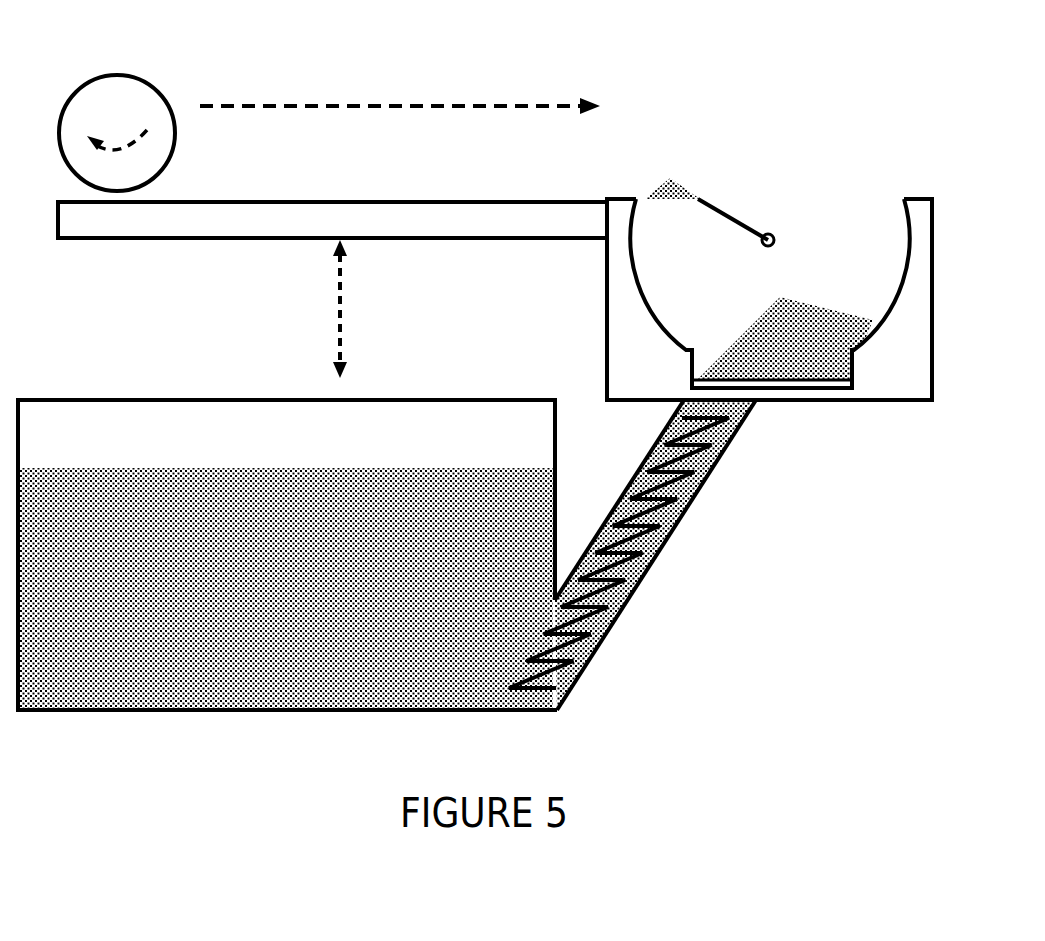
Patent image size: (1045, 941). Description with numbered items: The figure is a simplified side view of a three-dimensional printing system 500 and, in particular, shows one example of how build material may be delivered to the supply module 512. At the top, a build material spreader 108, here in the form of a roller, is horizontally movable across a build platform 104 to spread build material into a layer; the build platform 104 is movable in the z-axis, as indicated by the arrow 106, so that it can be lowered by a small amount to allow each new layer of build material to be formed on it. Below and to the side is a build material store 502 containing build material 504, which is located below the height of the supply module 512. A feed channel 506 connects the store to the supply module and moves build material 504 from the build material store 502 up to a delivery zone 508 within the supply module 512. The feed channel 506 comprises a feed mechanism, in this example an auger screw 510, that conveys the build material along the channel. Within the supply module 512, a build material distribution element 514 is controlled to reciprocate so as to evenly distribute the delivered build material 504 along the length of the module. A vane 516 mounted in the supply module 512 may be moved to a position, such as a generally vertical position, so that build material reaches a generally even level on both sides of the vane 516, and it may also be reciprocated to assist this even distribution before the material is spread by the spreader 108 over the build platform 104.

The powder handling system 500 is at (622, 56).
The build material spreader 108 is at (133, 76).
The build platform 104 is at (268, 202).
The arrow 106 is at (341, 277).
The build material store 502 is at (127, 399).
The build material 504 is at (667, 190).
The supply module 512 is at (603, 315).
The delivery zone 508 is at (817, 361).
The build material distribution element 514 is at (728, 379).
The vane 516 is at (717, 206).
The feed channel 506 is at (690, 508).
The auger screw 510 is at (583, 610).